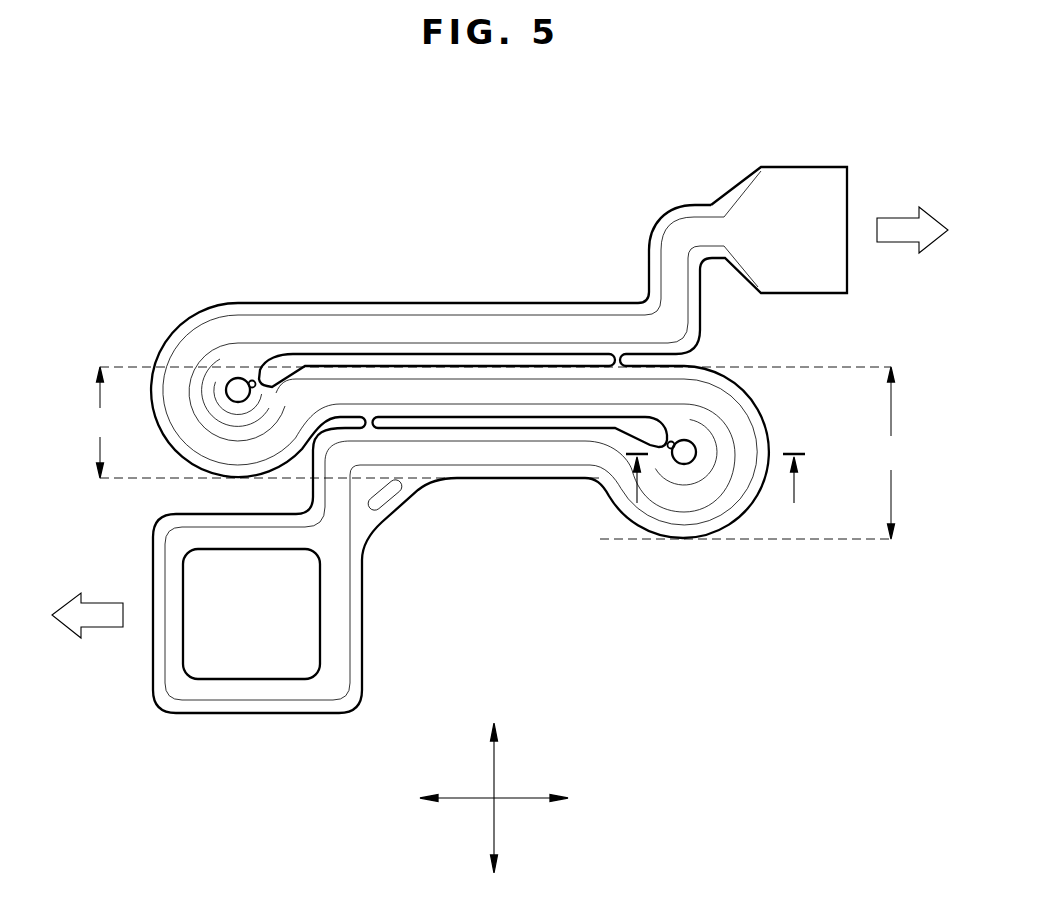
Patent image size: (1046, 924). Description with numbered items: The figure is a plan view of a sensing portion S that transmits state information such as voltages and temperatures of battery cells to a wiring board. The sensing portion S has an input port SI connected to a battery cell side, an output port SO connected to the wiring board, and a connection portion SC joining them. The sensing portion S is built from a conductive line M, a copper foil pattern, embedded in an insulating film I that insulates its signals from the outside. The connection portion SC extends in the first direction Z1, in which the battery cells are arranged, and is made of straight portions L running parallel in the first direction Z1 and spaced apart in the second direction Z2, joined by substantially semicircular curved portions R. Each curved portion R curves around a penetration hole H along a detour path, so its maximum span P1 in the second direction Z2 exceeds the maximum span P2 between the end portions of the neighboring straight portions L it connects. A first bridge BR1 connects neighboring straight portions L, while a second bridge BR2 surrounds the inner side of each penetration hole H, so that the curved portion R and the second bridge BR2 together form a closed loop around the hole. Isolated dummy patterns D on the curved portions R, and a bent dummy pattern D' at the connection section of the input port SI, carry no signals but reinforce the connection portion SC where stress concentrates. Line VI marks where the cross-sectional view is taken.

The conductive line M is at (295, 330).
The output port SO is at (820, 222).
The connection portion SC is at (488, 255).
The insulating film I is at (251, 303).
The first bridge BR1 is at (372, 420).
The second bridge BR2 is at (262, 380).
The penetration hole H is at (238, 392).
The curved portion R is at (163, 310).
The dummy pattern D is at (686, 514).
The dummy pattern D' is at (403, 530).
The straight portion L is at (527, 453).
The input port SI is at (252, 636).
The sensing portion S is at (122, 738).
The line VI- VI is at (718, 483).
The maximum distance of the path of the curved portion P1 is at (752, 453).
The maximum distance between end portions of neighboring straight portions P2 is at (489, 422).
The first direction Z1 is at (514, 800).
The second direction Z2 is at (496, 785).